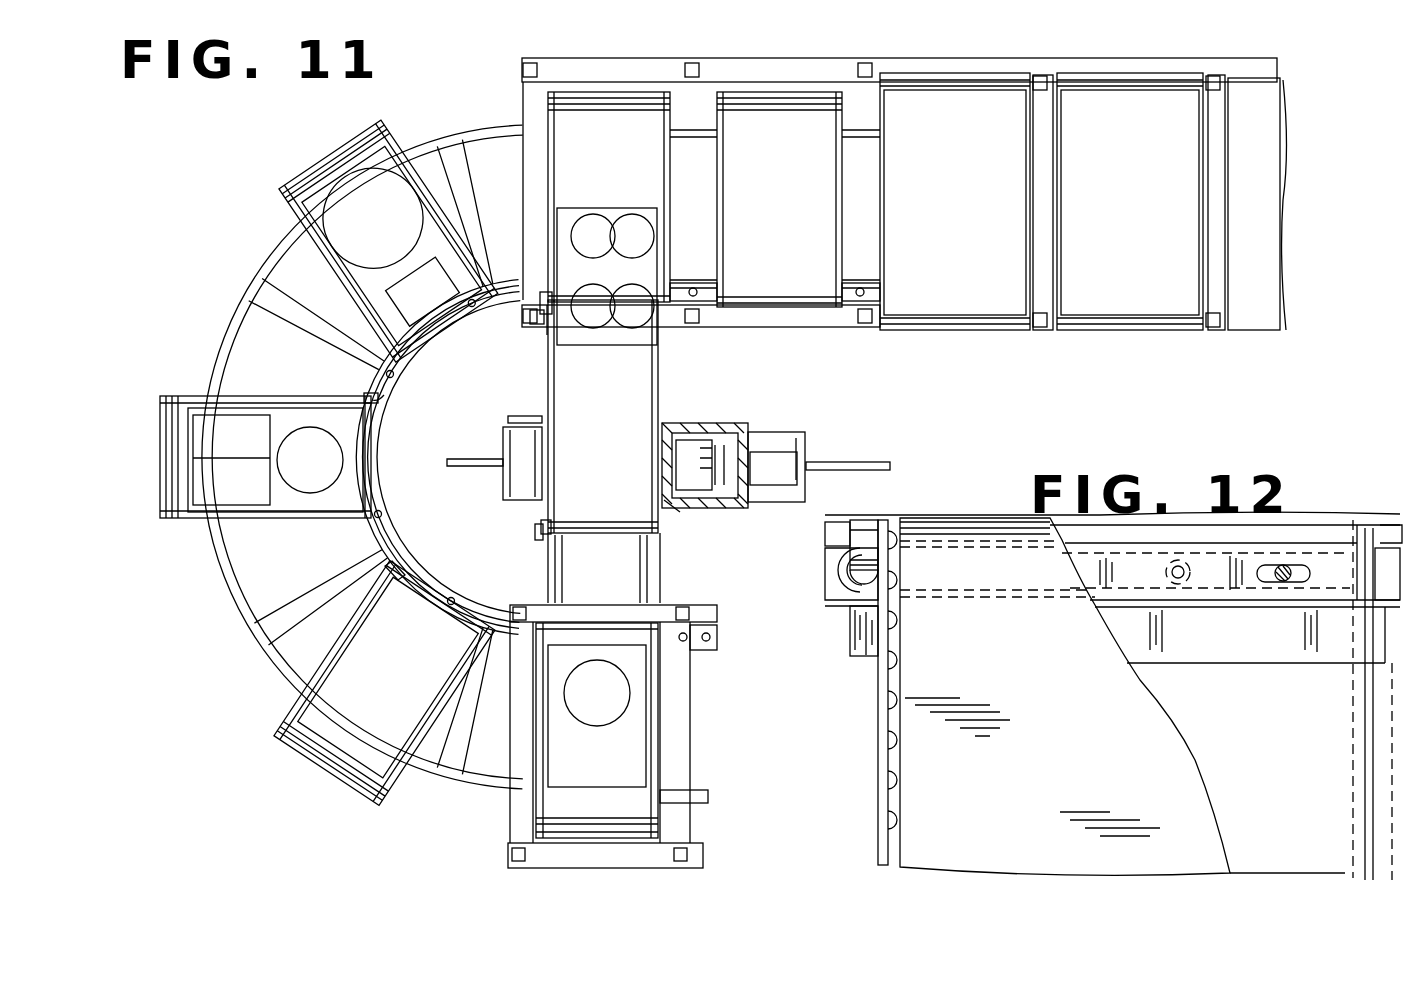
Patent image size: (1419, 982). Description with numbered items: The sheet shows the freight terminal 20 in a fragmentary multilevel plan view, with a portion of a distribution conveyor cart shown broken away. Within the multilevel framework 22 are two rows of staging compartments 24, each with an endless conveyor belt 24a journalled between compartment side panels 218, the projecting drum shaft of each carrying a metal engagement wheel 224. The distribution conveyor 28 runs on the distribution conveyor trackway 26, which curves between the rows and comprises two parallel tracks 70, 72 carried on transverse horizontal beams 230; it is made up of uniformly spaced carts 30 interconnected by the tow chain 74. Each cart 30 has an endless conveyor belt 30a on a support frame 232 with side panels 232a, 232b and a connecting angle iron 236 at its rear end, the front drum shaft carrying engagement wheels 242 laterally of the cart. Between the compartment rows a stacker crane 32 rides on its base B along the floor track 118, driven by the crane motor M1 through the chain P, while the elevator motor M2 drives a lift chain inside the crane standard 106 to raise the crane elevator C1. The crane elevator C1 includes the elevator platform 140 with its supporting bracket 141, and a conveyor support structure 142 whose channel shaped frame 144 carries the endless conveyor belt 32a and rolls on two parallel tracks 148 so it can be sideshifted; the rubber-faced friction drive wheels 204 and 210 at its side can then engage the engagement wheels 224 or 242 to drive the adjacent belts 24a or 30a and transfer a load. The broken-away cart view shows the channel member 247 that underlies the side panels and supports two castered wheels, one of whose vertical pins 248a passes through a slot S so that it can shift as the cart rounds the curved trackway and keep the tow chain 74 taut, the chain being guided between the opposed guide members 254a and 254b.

In FIG. 11, the freight terminal 20 is at (205, 210).
In FIG. 11, the multilevel framework 22 is at (752, 60).
In FIG. 11, the staging compartment 24 is at (1083, 195).
In FIG. 11, the endless conveyor belt 24a is at (978, 177).
In FIG. 11, the distribution conveyor trackway 26 is at (336, 457).
In FIG. 12, the distribution conveyor trackway 26 is at (812, 595).
In FIG. 11, the distribution conveyor 28 is at (487, 432).
In FIG. 12, the distribution conveyor 28 is at (858, 727).
In FIG. 11, the cart 30 is at (487, 432).
In FIG. 12, the cart 30 is at (868, 693).
In FIG. 11, the endless conveyor belt 30a is at (634, 156).
In FIG. 12, the endless conveyor belt 30a is at (1098, 780).
In FIG. 11, the stacker crane 32 is at (666, 417).
In FIG. 11, the endless conveyor belt 32a is at (620, 463).
In FIG. 12, the track 70 is at (823, 575).
In FIG. 11, the track 72 is at (228, 324).
In FIG. 11, the tow chain 74 is at (378, 537).
In FIG. 12, the tow chain 74 is at (1128, 617).
In FIG. 11, the crane standard 106 is at (680, 430).
In FIG. 11, the floor track 118 is at (832, 462).
In FIG. 11, the elevator platform 140 is at (590, 696).
In FIG. 11, the supporting bracket 141 is at (680, 512).
In FIG. 11, the conveyor support structure 142 is at (545, 357).
In FIG. 11, the channel shaped frame 144 is at (668, 381).
In FIG. 11, the tracks 148 is at (642, 561).
In FIG. 11, the friction drive wheel 204 is at (538, 324).
In FIG. 11, the friction drive wheel 210 is at (547, 567).
In FIG. 11, the compartment side panel 218 is at (1030, 109).
In FIG. 11, the engagement wheel 224 is at (1042, 332).
In FIG. 11, the transverse horizontal beam 230 is at (318, 310).
In FIG. 11, the support frame 232 is at (298, 214).
In FIG. 12, the side panel 232a is at (1345, 744).
In FIG. 12, the side panel 232b is at (876, 791).
In FIG. 11, the connecting angle iron 236 is at (163, 517).
In FIG. 11, the engagement wheel 242 is at (655, 300).
In FIG. 12, the engagement wheel 242 is at (860, 520).
In FIG. 12, the channel member 247 is at (1098, 571).
In FIG. 12, the vertical pin 248a is at (1276, 585).
In FIG. 11, the guide member 254a is at (380, 398).
In FIG. 12, the guide member 254a is at (1360, 525).
In FIG. 11, the guide member 254b is at (366, 385).
In FIG. 12, the guide member 254b is at (850, 640).
In FIG. 11, the base B is at (778, 495).
In FIG. 11, the crane elevator C1 is at (672, 365).
In FIG. 11, the crane motor M1 is at (512, 446).
In FIG. 11, the elevator motor M2 is at (778, 455).
In FIG. 11, the chain P is at (508, 420).
In FIG. 12, the slot S is at (1300, 566).